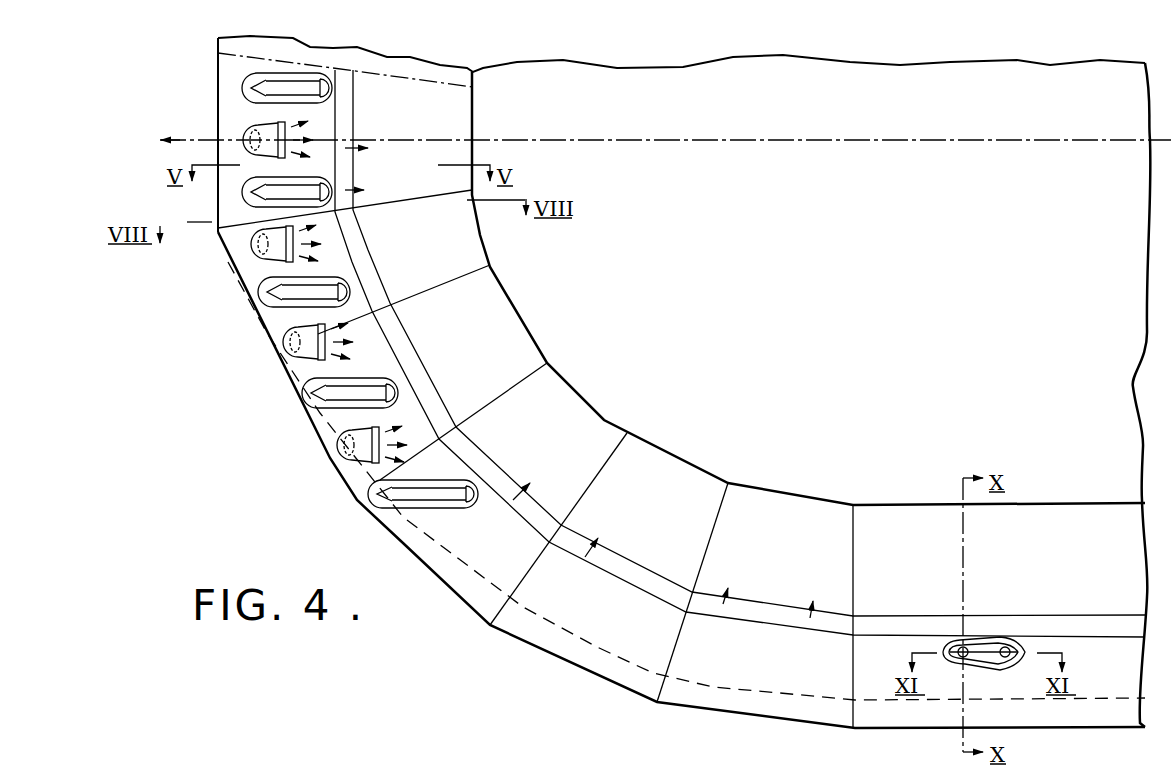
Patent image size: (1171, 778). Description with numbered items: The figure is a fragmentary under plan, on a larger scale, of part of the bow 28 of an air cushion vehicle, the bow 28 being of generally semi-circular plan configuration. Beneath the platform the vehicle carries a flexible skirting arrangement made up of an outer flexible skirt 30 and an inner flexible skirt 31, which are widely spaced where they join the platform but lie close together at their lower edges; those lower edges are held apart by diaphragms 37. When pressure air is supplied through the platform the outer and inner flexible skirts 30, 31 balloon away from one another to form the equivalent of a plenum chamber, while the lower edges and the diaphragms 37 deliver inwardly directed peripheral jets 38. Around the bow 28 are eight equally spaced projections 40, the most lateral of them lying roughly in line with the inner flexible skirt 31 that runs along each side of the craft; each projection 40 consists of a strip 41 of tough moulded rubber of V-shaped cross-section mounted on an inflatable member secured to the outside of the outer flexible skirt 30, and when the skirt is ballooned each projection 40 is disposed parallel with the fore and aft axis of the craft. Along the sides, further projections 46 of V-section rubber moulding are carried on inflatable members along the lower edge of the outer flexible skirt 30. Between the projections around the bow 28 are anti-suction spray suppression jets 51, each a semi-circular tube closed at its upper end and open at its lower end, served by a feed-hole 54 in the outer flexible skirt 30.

The bow 28 is at (454, 573).
The outer flexible skirt 30 is at (562, 598).
The inner flexible skirt 31 is at (648, 488).
The diaphragm 37 is at (447, 436).
The inwardly directed peripheral jets 38 is at (625, 577).
The projection 40 is at (322, 411).
The strip 41 is at (284, 94).
The projection 46 is at (992, 640).
The anti-suction spray suppression jet 51 is at (240, 133).
The feed-hole 54 is at (423, 483).